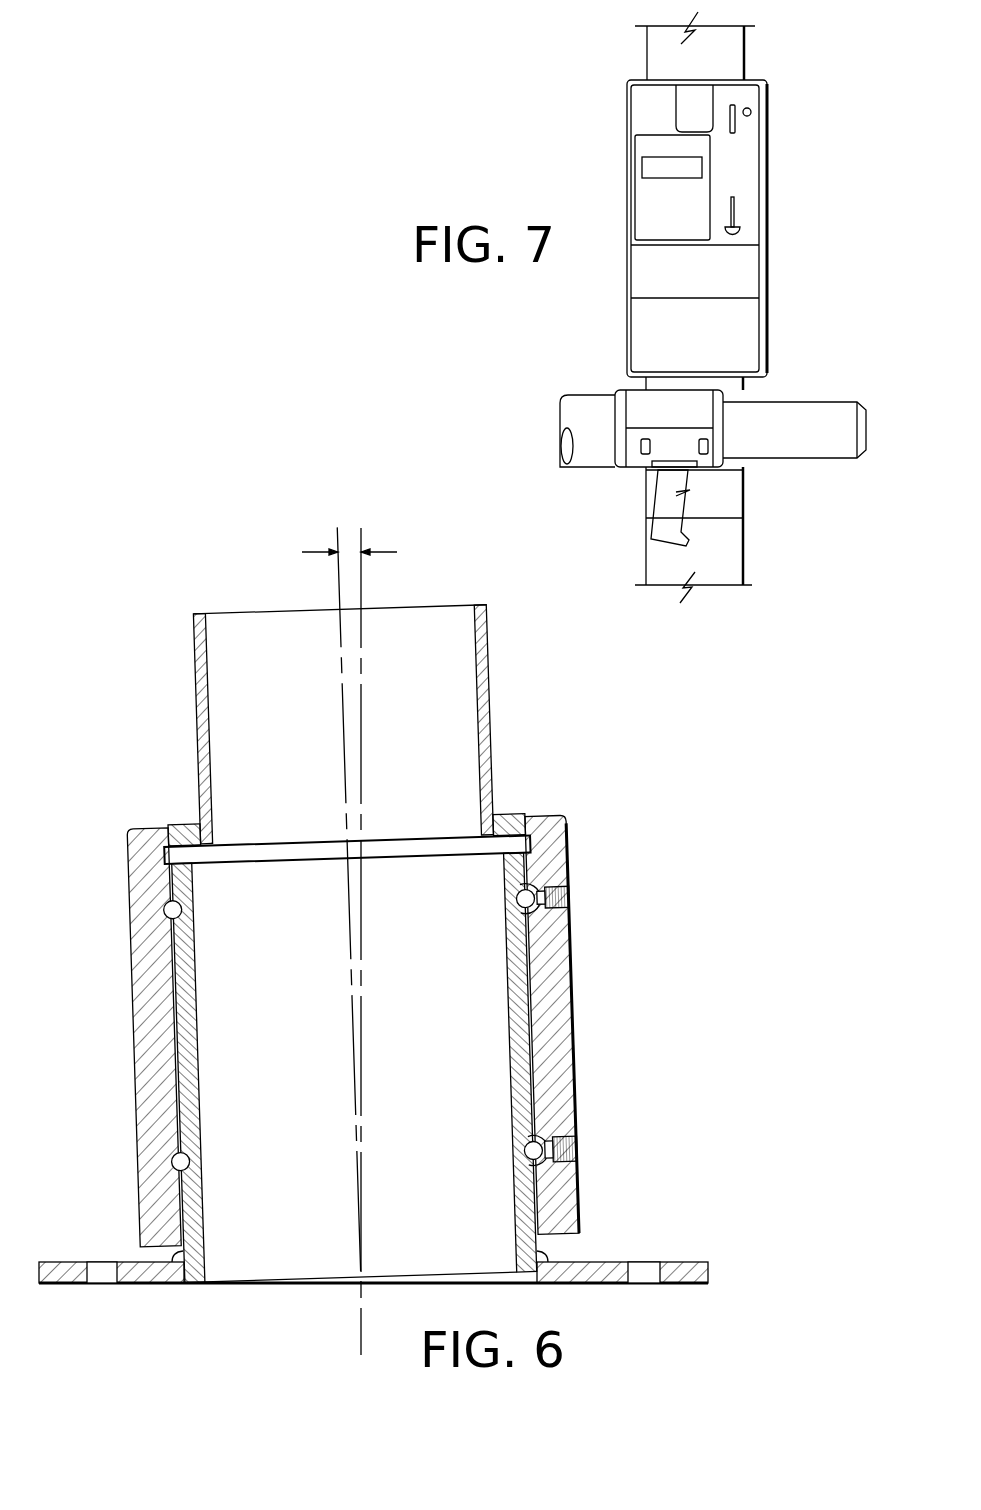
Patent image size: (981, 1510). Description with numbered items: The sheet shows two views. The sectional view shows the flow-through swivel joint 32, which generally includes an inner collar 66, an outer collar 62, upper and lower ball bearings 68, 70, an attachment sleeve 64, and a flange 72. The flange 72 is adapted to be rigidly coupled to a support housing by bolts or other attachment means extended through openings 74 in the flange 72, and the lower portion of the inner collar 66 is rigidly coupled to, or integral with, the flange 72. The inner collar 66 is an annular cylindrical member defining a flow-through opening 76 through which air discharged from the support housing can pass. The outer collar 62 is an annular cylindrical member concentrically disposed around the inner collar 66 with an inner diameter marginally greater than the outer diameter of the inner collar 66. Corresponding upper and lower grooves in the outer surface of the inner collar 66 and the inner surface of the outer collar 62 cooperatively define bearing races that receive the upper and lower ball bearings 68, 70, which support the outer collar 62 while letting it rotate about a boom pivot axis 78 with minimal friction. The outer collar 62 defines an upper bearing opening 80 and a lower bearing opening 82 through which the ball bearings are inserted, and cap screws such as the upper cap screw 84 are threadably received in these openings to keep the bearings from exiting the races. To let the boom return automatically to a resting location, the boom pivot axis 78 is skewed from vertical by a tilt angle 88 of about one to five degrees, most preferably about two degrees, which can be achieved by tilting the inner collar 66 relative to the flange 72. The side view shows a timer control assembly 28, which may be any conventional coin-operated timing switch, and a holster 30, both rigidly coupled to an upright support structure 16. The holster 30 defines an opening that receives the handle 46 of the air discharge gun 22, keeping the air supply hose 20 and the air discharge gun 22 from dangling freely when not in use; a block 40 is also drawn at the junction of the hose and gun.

In FIG. 7, the upright support structure 16 is at (746, 546).
In FIG. 7, the air supply hose 20 is at (558, 396).
In FIG. 7, the air discharge gun 22 is at (822, 400).
In FIG. 7, the timer control assembly 28 is at (767, 219).
In FIG. 7, the holster 30 is at (733, 505).
In FIG. 7, the swivel block 40 is at (600, 392).
In FIG. 7, the handle 46 is at (658, 508).
In FIG. 6, the flow-through swivel joint 32 is at (590, 1050).
In FIG. 6, the outer collar 62 is at (567, 840).
In FIG. 6, the attachment sleeve 64 is at (493, 703).
In FIG. 6, the inner collar 66 is at (198, 1076).
In FIG. 6, the upper ball bearing 68 is at (169, 900).
In FIG. 6, the lower ball bearing 70 is at (175, 1158).
In FIG. 6, the flange 72 is at (708, 1272).
In FIG. 6, the openings 74 is at (100, 1270).
In FIG. 6, the flow-through opening 76 is at (464, 1075).
In FIG. 6, the boom pivot axis 78 is at (337, 593).
In FIG. 6, the upper bearing opening 80 is at (558, 922).
In FIG. 6, the lower bearing opening 82 is at (572, 897).
In FIG. 6, the upper cap screw 84 is at (581, 1148).
In FIG. 6, the tilt angle 88 is at (305, 552).